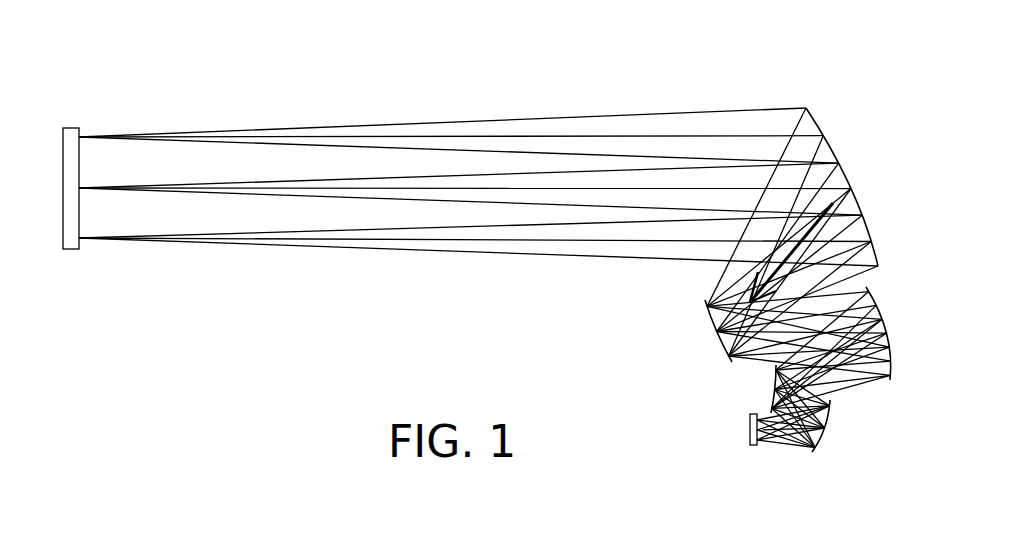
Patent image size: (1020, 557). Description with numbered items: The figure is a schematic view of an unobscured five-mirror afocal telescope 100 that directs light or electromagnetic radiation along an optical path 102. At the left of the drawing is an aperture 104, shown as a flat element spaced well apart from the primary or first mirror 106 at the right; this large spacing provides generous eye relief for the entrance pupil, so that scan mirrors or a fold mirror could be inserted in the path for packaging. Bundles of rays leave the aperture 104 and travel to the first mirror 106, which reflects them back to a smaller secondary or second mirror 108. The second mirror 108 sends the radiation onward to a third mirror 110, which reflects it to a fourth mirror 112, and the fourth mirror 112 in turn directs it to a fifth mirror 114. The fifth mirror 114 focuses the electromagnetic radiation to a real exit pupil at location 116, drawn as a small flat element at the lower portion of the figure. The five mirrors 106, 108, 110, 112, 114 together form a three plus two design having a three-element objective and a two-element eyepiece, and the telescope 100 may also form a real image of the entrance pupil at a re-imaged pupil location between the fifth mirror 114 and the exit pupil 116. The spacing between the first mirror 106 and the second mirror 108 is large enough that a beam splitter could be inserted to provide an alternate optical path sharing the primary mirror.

The unobscured five-mirror afocal telescope 100 is at (497, 98).
The optical path 102 is at (792, 243).
The aperture 104 is at (63, 188).
The first mirror 106 is at (829, 155).
The second mirror 108 is at (715, 313).
The third mirror 110 is at (884, 322).
The fourth mirror 112 is at (772, 393).
The fifth mirror 114 is at (818, 444).
The exit pupil location 116 is at (752, 445).